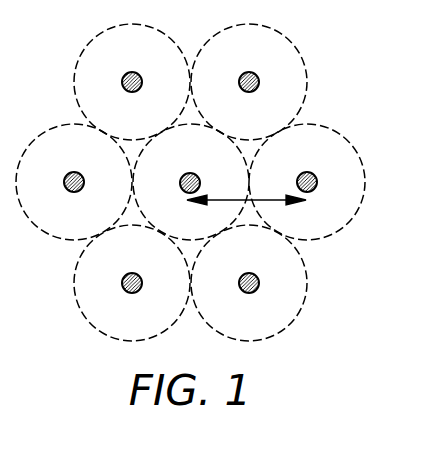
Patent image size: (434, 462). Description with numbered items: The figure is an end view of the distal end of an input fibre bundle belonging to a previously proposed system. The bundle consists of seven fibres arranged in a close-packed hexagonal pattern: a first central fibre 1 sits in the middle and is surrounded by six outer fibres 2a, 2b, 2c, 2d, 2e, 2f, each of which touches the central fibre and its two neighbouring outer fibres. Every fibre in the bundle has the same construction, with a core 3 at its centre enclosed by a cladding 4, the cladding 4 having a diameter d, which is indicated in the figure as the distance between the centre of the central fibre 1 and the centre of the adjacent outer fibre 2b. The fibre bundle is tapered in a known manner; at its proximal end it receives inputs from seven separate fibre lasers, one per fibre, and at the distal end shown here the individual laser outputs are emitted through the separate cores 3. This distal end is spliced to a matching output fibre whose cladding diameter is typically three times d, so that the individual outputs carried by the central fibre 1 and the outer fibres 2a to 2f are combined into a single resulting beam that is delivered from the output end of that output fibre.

The central fibre 1 is at (183, 158).
The outer fibre 2a is at (265, 82).
The outer fibre 2b is at (297, 158).
The outer fibre 2c is at (238, 257).
The outer fibre 2d is at (122, 257).
The outer fibre 2e is at (63, 158).
The outer fibre 2f is at (123, 56).
The core 3 is at (122, 81).
The cladding 4 is at (305, 75).
The cladding diameter d is at (246, 193).